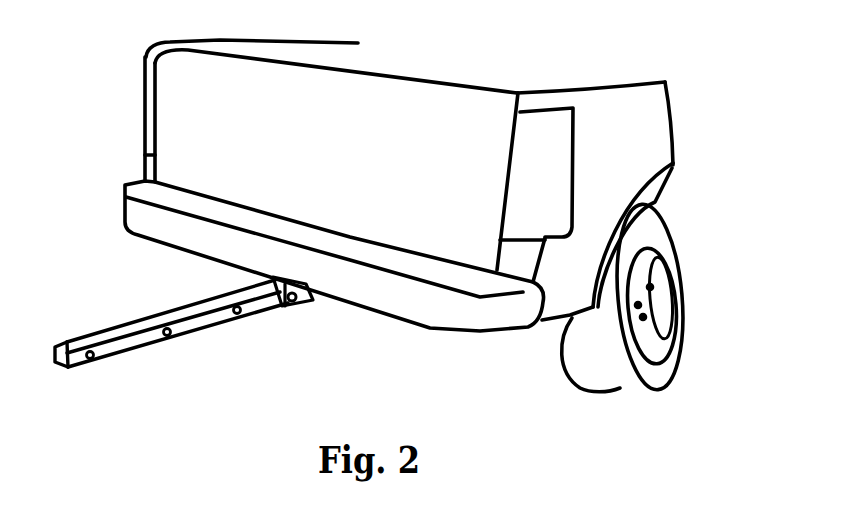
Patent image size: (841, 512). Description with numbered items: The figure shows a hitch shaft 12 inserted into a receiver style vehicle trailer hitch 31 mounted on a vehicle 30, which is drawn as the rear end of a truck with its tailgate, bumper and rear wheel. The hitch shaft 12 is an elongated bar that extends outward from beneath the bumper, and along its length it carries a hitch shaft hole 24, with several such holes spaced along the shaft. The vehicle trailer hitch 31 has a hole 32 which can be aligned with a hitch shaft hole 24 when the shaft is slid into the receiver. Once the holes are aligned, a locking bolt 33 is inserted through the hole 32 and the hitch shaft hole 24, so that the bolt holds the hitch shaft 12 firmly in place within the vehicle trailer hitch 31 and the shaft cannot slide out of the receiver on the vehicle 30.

The hitch shaft 12 is at (112, 329).
The hitch shaft hole 24 is at (90, 359).
The vehicle 30 is at (680, 67).
The vehicle trailer hitch 31 is at (285, 306).
The hole 32 is at (297, 305).
The locking bolt 33 is at (305, 298).